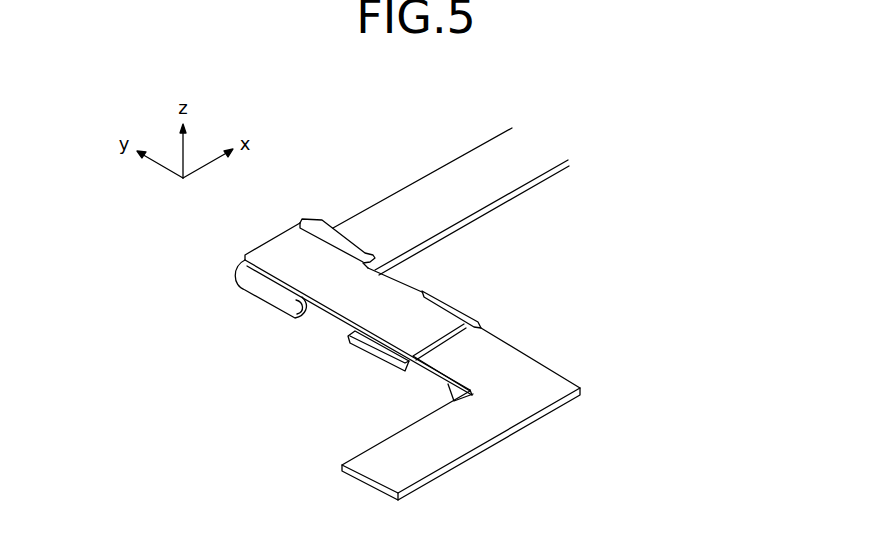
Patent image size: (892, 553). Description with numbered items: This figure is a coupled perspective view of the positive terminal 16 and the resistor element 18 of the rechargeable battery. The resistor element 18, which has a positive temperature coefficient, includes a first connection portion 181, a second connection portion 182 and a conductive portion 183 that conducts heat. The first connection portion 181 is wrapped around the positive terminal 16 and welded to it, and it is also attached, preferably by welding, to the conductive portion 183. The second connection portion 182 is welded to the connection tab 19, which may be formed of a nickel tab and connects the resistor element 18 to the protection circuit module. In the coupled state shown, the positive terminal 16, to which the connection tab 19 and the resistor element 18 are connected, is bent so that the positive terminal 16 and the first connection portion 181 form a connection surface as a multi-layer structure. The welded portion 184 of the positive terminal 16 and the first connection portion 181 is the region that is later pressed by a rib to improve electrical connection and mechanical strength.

The positive terminal 16 is at (442, 207).
The resistor element 18 is at (303, 337).
The first connection portion 181 is at (366, 302).
The second connection portion 182 is at (426, 376).
The conductive portion 183 is at (374, 351).
The welded portion 184 is at (268, 250).
The connection tab 19 is at (432, 455).